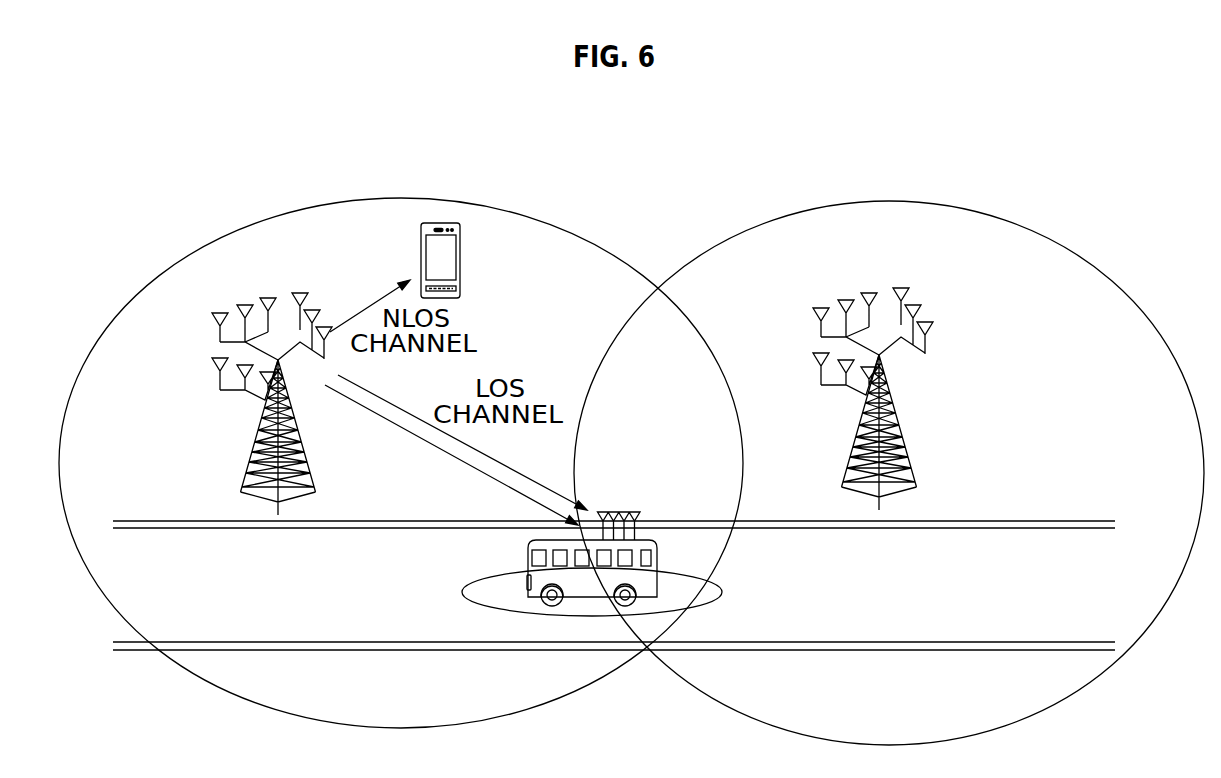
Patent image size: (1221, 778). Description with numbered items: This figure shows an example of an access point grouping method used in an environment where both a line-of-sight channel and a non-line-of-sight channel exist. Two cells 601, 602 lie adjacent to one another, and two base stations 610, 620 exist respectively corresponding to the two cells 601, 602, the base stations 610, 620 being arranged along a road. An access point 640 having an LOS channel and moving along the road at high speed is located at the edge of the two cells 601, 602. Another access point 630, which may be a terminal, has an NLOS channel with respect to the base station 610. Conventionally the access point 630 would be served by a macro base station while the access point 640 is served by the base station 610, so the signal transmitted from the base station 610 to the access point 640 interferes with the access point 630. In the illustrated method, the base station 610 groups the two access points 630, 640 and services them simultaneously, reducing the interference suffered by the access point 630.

The cell 601 is at (407, 198).
The cell 602 is at (893, 202).
The base station 610 is at (220, 312).
The base station 620 is at (923, 326).
The access point 630 is at (460, 258).
The access point 640 is at (527, 544).